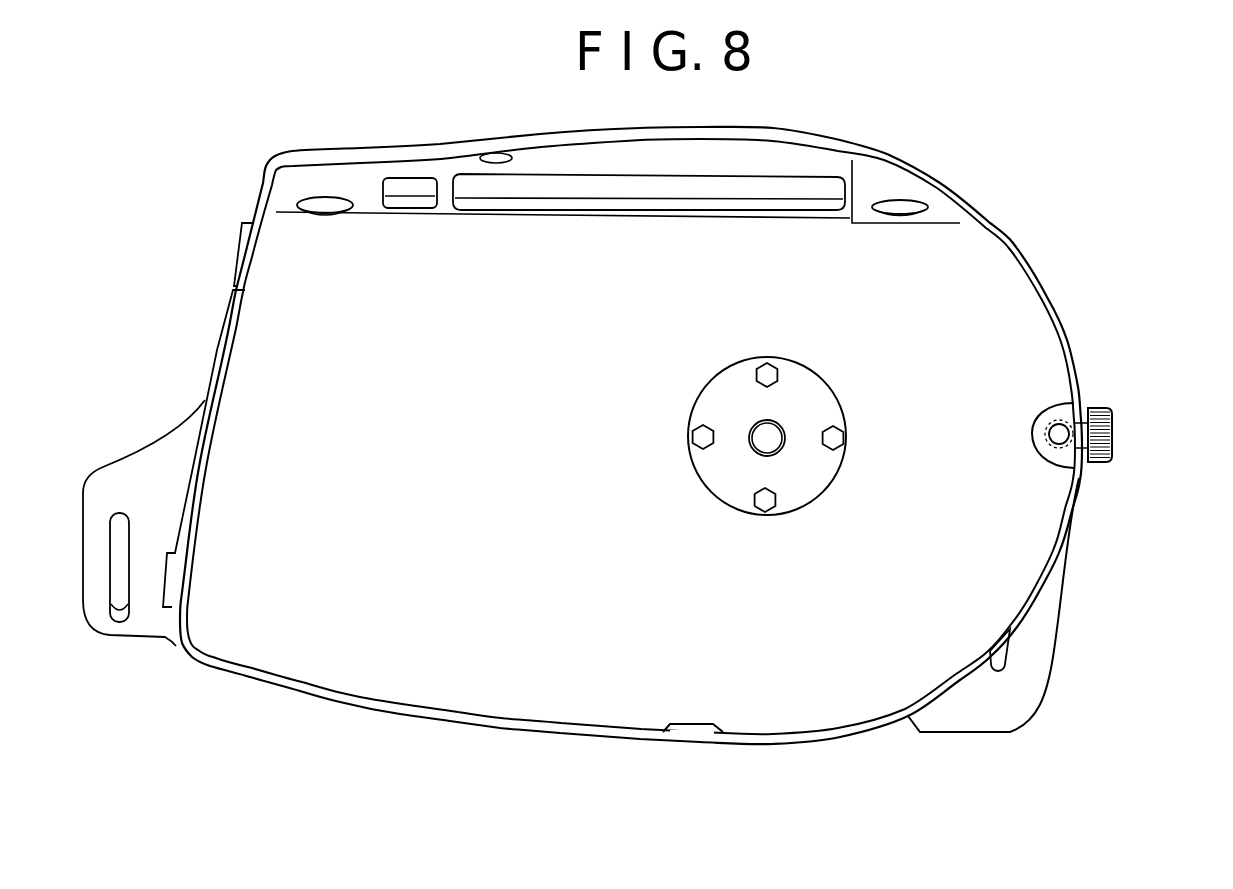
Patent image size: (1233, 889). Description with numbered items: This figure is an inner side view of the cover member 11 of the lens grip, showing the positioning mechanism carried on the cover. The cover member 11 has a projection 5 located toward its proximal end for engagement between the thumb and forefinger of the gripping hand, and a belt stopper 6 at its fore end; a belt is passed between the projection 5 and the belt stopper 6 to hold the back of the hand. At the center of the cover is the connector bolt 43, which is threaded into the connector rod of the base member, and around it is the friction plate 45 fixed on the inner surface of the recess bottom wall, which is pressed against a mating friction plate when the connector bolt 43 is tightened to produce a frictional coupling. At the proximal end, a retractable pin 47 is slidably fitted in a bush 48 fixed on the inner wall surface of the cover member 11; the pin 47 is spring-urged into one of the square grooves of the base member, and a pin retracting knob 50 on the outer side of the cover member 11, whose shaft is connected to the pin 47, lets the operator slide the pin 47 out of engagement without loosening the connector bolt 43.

The projection 5 is at (1033, 697).
The belt stopper 6 is at (118, 637).
The cover member 11 is at (750, 743).
The connector bolt 43 is at (770, 443).
The friction plate 45 is at (715, 477).
The retractable pin 47 is at (1079, 403).
The bush 48 is at (1065, 450).
The pin retracting knob 50 is at (1107, 436).